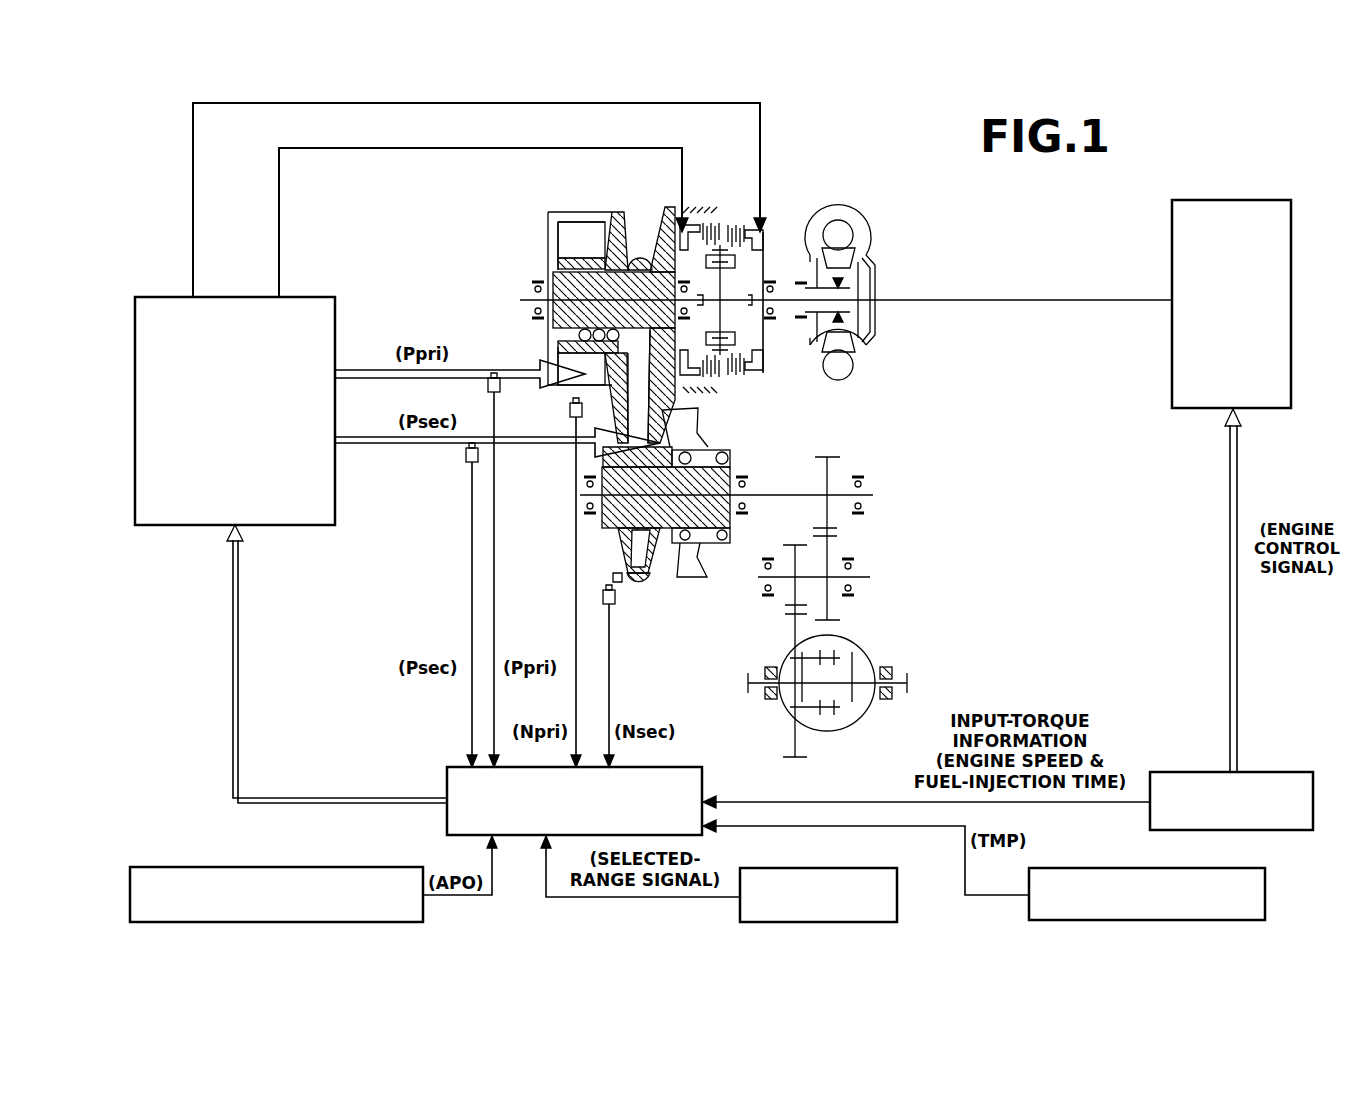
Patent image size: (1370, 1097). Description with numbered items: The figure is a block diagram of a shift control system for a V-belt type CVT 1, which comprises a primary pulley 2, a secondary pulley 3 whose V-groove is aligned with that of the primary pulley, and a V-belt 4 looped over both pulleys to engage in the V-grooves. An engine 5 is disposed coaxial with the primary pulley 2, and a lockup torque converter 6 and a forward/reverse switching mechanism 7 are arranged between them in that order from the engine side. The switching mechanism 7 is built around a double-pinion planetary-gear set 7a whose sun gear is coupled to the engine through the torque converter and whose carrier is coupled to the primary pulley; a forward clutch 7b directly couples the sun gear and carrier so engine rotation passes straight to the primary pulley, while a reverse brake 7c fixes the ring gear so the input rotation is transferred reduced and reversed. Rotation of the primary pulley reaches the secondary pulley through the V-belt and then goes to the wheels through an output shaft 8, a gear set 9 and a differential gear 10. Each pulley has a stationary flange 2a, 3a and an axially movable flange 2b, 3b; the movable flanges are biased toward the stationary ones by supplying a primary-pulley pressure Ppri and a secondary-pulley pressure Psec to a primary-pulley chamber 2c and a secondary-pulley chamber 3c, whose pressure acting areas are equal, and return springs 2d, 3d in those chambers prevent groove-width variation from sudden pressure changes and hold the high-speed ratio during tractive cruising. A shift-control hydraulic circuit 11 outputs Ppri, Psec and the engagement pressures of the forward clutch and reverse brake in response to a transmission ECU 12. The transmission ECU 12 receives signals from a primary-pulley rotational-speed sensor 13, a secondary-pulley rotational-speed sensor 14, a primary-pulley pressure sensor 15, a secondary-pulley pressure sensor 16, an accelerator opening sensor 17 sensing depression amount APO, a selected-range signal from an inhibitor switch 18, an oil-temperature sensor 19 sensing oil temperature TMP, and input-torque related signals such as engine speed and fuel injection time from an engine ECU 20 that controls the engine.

The V-belt type CVT 1 is at (583, 194).
The primary pulley 2 is at (650, 208).
The stationary flange 2a is at (667, 205).
The movable flange 2b is at (617, 212).
The primary-pulley chamber 2c is at (570, 238).
The return spring 2d is at (550, 215).
The secondary pulley 3 is at (692, 590).
The stationary flange 3a is at (616, 570).
The movable flange 3b is at (646, 576).
The secondary-pulley chamber 3c is at (672, 580).
The return spring 3d is at (708, 448).
The V-belt 4 is at (640, 256).
The engine 5 is at (1248, 200).
The lockup torque converter 6 is at (848, 192).
The forward/reverse switching mechanism 7 is at (696, 200).
The double-pinion planetary-gear set 7a is at (737, 224).
The forward clutch 7b is at (727, 222).
The reverse brake 7c is at (712, 222).
The output shaft 8 is at (780, 493).
The gear set 9 is at (798, 553).
The differential gear 10 is at (884, 637).
The shift-control hydraulic circuit 11 is at (312, 297).
The transmission electronic control unit 12 is at (447, 783).
The primary-pulley rotational-speed sensor 13 is at (568, 408).
The secondary-pulley rotational-speed sensor 14 is at (620, 600).
The primary-pulley pressure sensor 15 is at (487, 392).
The secondary-pulley pressure sensor 16 is at (463, 461).
The accelerator opening sensor 17 is at (345, 866).
The inhibitor switch 18 is at (792, 868).
The oil-temperature sensor 19 is at (1146, 868).
The engine electronic control unit 20 is at (1268, 771).